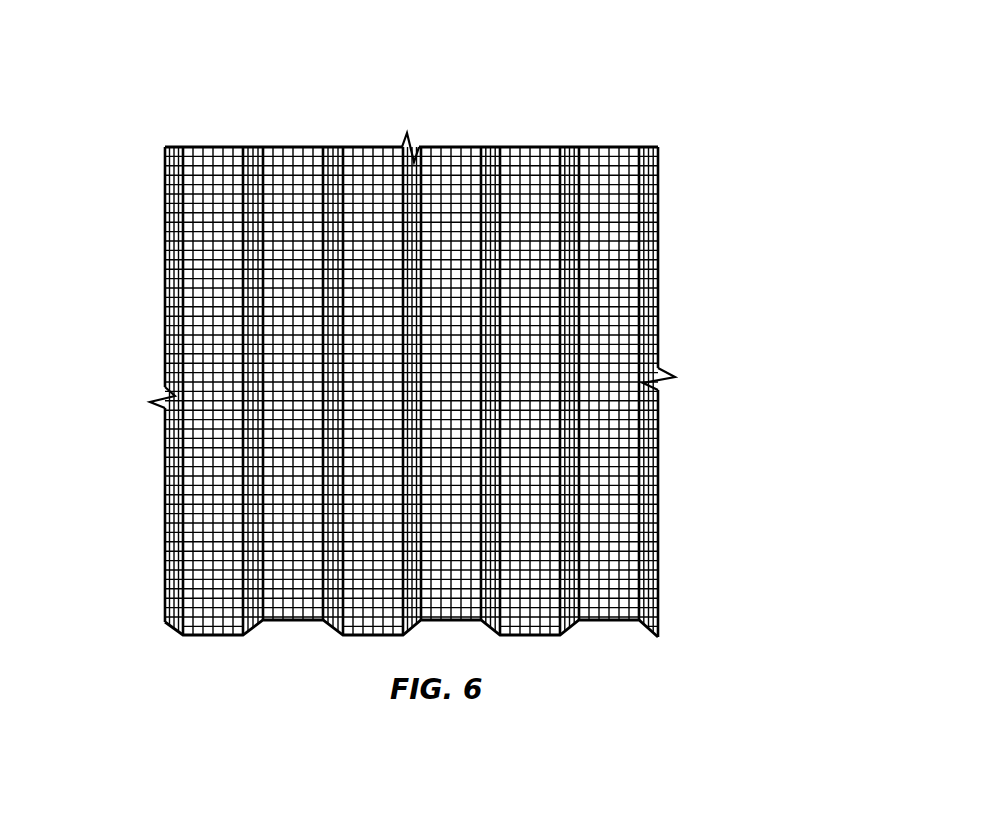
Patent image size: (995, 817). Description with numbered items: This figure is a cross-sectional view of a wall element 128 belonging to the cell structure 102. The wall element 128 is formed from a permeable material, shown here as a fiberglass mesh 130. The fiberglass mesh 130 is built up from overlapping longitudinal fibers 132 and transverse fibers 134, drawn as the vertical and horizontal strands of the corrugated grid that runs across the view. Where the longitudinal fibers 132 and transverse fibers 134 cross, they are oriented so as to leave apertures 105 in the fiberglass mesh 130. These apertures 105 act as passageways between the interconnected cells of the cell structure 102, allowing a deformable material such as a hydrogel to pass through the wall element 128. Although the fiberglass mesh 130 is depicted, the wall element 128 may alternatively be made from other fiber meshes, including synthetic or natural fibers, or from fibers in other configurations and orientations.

The wall element 128 is at (695, 107).
The fiberglass mesh 130 is at (178, 147).
The cell structure 102 is at (215, 378).
The longitudinal fibers 132 is at (290, 150).
The transverse fibers 134 is at (363, 167).
The apertures 105 is at (612, 243).